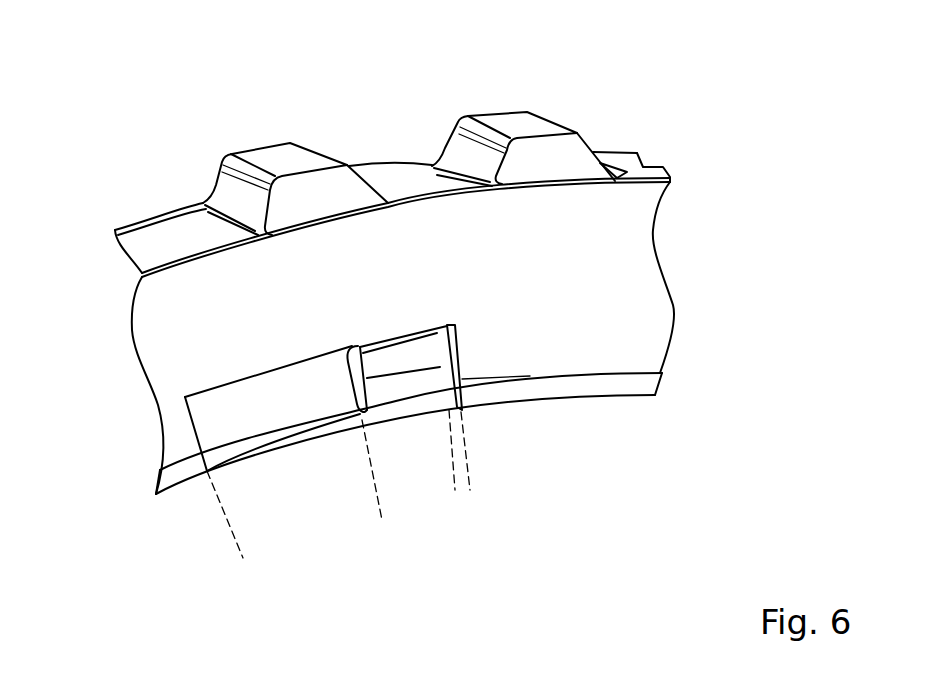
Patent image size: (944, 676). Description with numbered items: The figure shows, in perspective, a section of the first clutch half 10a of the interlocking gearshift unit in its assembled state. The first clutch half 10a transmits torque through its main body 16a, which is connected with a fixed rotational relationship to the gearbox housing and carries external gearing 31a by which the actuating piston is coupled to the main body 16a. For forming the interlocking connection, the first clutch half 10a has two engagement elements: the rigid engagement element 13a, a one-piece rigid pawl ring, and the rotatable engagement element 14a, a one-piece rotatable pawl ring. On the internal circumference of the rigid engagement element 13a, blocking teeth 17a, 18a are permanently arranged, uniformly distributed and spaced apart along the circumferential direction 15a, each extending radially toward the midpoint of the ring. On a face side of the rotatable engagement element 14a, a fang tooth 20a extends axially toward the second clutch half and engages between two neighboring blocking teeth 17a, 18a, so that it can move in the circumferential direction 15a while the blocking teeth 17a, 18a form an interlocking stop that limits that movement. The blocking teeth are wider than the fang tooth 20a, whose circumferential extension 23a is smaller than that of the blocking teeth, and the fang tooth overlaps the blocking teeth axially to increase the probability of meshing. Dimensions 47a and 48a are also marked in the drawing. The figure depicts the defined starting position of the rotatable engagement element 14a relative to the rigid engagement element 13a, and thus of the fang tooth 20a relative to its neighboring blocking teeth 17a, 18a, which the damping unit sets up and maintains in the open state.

The first clutch half 10a is at (672, 210).
The rigid engagement element 13a is at (640, 327).
The rotatable engagement element 14a is at (272, 395).
The circumferential direction 15a is at (477, 78).
The main body 16a is at (213, 287).
The blocking tooth 17a is at (164, 500).
The blocking tooth 18a is at (593, 401).
The fang tooth 20a is at (432, 380).
The circumferential extension 23a is at (455, 497).
The external gearing 31a is at (613, 143).
The length 47a is at (380, 513).
The width 48a is at (430, 488).